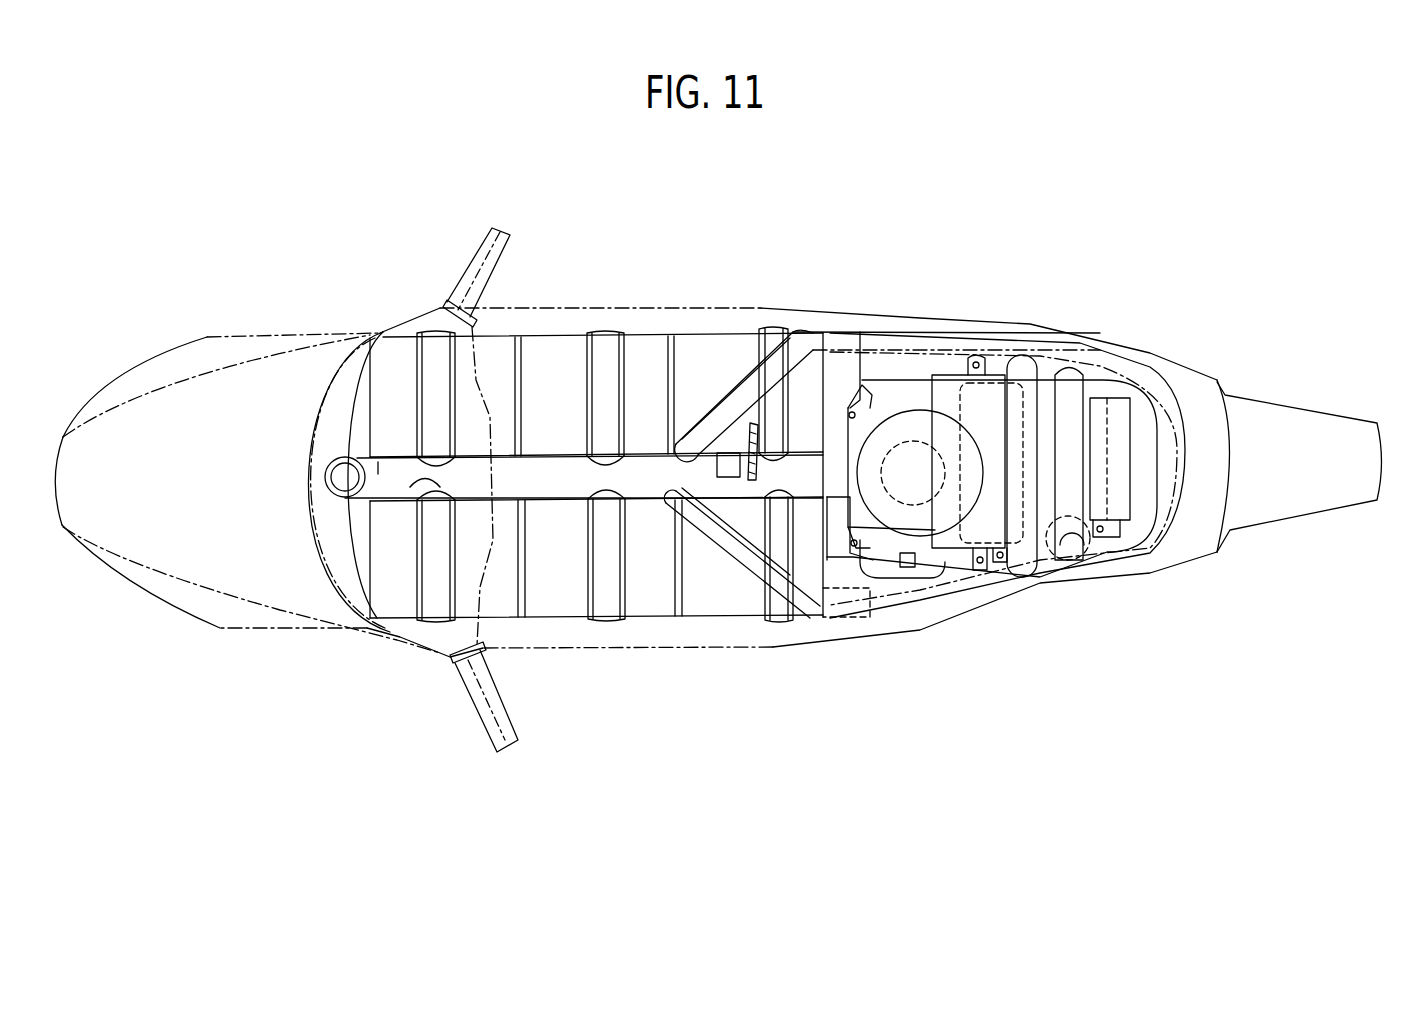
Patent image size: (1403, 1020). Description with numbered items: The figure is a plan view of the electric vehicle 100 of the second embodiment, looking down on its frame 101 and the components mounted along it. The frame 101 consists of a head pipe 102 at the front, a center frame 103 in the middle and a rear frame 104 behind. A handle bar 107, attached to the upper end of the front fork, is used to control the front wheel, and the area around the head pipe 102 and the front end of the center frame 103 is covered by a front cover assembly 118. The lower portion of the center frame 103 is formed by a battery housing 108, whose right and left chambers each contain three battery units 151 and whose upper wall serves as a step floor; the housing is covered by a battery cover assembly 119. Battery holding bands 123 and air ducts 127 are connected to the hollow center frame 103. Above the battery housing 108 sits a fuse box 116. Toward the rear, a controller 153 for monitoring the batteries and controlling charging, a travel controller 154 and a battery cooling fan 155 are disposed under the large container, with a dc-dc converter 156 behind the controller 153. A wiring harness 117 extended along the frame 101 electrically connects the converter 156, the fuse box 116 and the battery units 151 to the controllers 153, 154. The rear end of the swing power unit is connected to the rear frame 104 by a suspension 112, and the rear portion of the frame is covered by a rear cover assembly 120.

The electric vehicle 100 is at (1112, 192).
The frame 101 is at (905, 318).
The head pipe 102 is at (330, 472).
The center frame 103 is at (557, 456).
The rear frame 104 is at (967, 343).
The handle bar 107 is at (490, 715).
The battery housing 108 is at (652, 630).
The suspension 112 is at (1093, 552).
The fuse box 116 is at (728, 463).
The wiring harness 117 is at (795, 345).
The front cover assembly 118 is at (172, 345).
The battery cover assembly 119 is at (730, 700).
The rear cover assembly 120 is at (1148, 343).
The battery holding bands 123 is at (433, 343).
The air ducts 127 is at (413, 483).
The battery units 151 is at (400, 352).
The controller 153 is at (992, 527).
The travel controller 154 is at (1043, 573).
The battery cooling fan 155 is at (897, 520).
The dc-dc converter 156 is at (1150, 487).